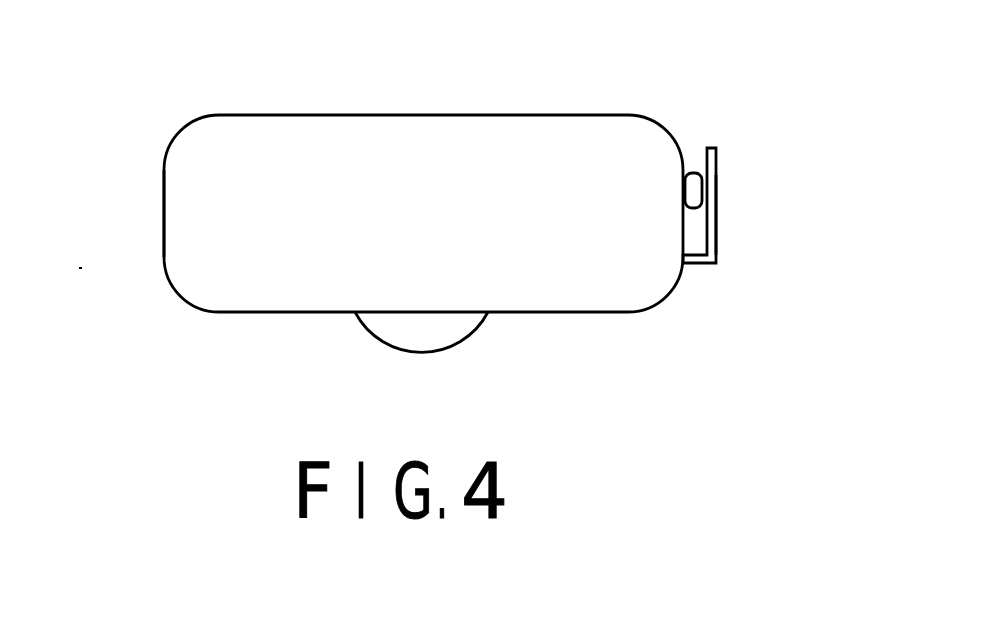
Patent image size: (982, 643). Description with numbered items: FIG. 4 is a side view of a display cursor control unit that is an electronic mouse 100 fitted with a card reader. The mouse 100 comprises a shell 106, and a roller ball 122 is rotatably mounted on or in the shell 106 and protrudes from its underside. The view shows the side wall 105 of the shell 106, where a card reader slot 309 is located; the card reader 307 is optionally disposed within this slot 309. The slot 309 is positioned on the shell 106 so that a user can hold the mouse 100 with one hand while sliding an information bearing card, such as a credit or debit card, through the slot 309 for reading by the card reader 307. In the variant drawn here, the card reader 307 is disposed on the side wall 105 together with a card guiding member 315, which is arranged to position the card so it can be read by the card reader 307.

The electronic mouse 100 is at (677, 292).
The side wall 105 is at (447, 221).
The shell 106 is at (178, 200).
The roller ball 122 is at (412, 350).
The card reader 307 is at (693, 172).
The card reader slot 309 is at (700, 152).
The card guiding member 315 is at (717, 185).